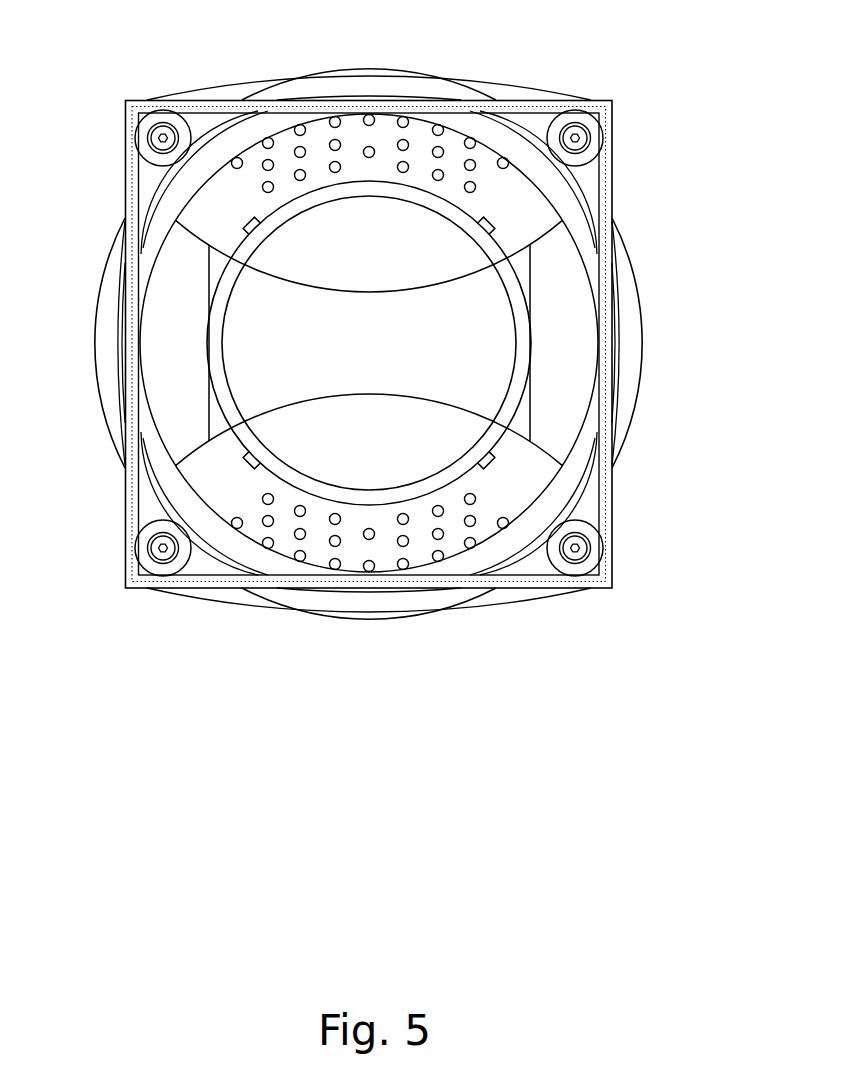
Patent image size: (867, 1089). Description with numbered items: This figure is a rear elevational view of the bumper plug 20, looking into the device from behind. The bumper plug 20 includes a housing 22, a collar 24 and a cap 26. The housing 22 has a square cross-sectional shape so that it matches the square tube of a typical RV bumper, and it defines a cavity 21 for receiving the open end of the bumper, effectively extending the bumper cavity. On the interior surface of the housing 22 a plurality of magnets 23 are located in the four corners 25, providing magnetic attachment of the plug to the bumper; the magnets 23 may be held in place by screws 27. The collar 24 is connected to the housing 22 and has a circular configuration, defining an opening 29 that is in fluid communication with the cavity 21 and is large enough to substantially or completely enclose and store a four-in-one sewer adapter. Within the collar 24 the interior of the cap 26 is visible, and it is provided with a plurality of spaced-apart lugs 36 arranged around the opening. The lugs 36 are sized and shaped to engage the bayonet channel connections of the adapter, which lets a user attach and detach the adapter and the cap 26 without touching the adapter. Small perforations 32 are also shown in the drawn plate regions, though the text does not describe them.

The bumper plug 20 is at (96, 225).
The cavity 21 is at (578, 331).
The housing 22 is at (616, 193).
The magnets 23 is at (142, 143).
The collar 24 is at (94, 350).
The corners 25 is at (160, 134).
The cap 26 is at (386, 356).
The screws 27 is at (158, 136).
The opening 29 is at (160, 430).
The ventilation holes 32 is at (470, 139).
The lugs 36 is at (252, 226).